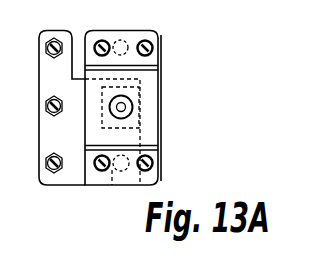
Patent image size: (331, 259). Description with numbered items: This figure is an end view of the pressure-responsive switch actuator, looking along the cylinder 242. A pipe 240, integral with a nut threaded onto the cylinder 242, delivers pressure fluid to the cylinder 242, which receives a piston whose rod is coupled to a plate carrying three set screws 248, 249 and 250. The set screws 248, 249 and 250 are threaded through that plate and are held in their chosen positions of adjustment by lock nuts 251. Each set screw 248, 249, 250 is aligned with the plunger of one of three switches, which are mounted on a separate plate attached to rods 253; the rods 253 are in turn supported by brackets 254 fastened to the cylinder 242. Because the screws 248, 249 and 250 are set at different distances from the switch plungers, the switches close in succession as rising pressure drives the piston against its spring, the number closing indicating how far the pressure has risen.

The pipe 240 is at (134, 108).
The cylinder 242 is at (162, 135).
The set screw 248 is at (46, 166).
The set screw 249 is at (45, 112).
The set screw 250 is at (46, 50).
The lock nut 251 is at (50, 173).
The rod 253 is at (134, 38).
The bracket 254 is at (157, 55).